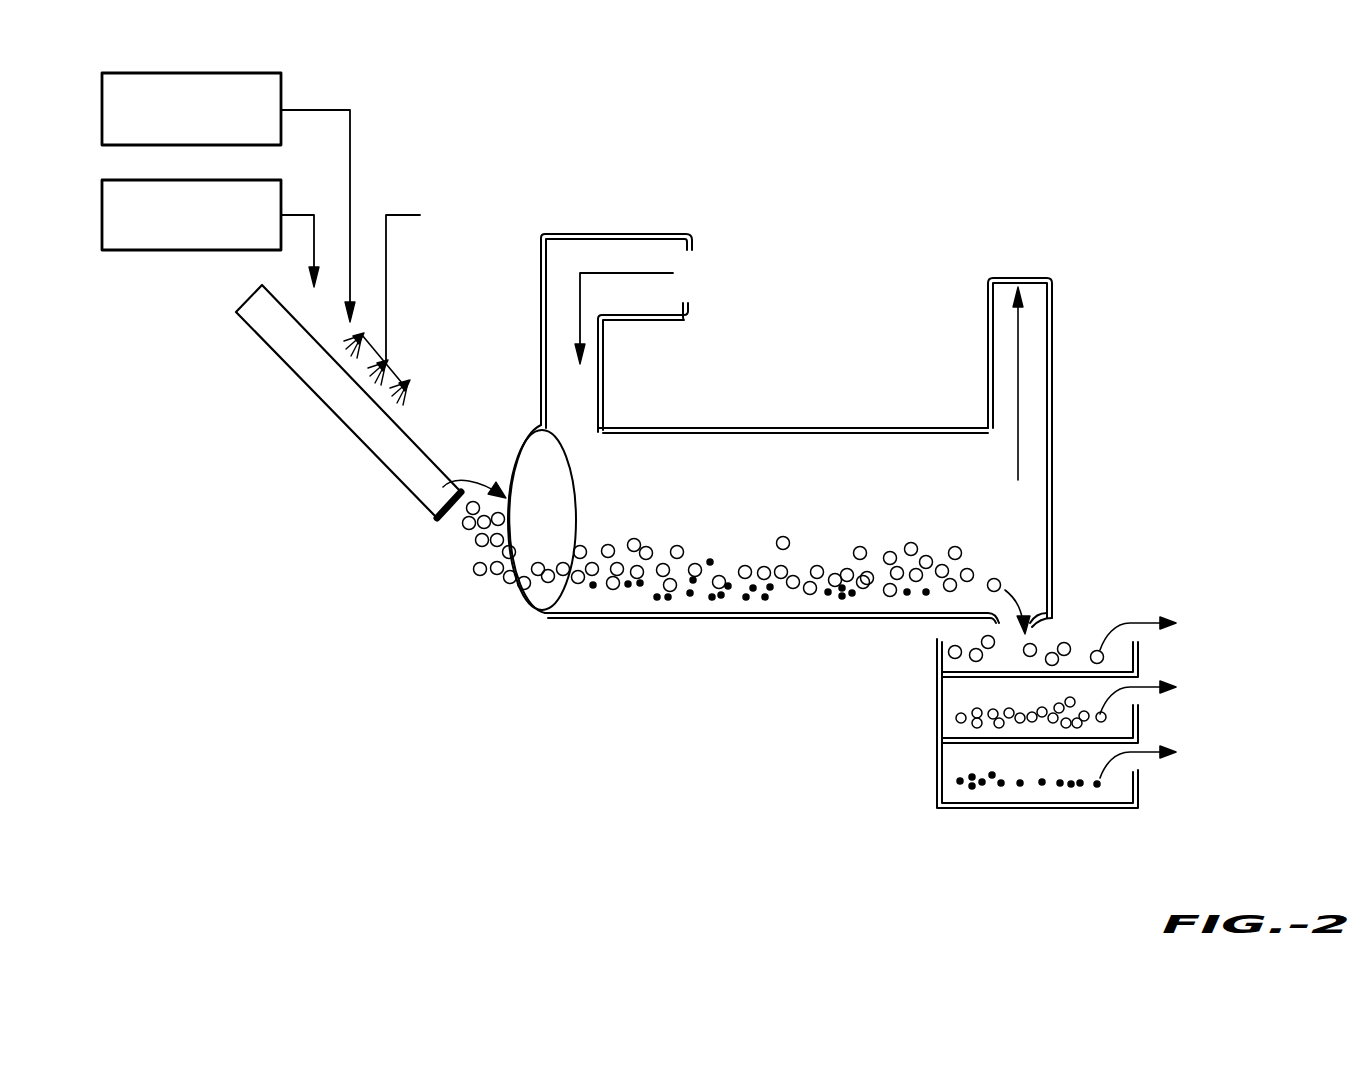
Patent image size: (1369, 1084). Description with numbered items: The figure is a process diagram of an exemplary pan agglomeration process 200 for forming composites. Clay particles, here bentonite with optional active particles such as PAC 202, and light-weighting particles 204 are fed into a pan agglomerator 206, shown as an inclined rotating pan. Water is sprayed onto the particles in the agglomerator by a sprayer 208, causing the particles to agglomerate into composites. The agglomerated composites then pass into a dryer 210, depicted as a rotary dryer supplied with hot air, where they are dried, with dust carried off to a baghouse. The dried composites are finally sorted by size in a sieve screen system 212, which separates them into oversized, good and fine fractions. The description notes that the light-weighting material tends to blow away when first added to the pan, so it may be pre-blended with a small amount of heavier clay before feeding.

The pan agglomeration process 200 is at (1026, 173).
The bentonite and PAC feed 202 is at (102, 113).
The light-weighting particles 204 is at (102, 213).
The pan agglomerator 206 is at (262, 340).
The sprayer 208 is at (398, 372).
The dryer 210 is at (761, 683).
The sieve screen system 212 is at (920, 756).